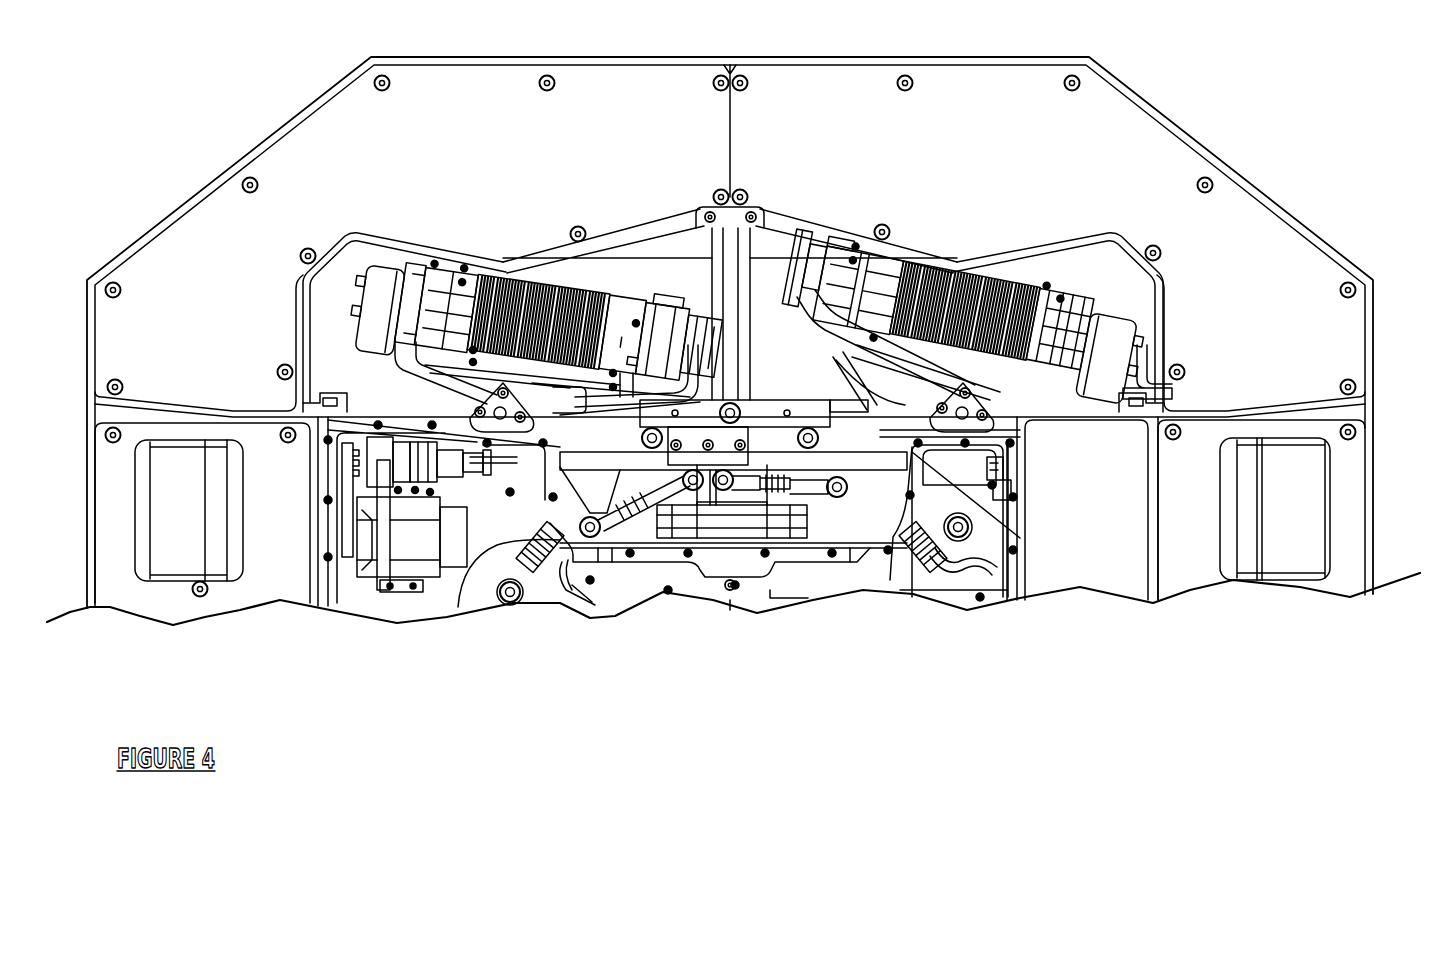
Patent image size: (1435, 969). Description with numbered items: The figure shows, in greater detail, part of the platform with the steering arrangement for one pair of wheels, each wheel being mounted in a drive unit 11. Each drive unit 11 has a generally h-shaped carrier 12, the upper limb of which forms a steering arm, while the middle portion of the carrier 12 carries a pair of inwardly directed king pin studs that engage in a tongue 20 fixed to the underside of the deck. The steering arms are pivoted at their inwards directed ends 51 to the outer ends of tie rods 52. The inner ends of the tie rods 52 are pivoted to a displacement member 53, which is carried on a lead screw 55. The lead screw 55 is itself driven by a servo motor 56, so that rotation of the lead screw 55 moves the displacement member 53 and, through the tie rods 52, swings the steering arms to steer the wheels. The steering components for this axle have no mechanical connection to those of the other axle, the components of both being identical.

The drive unit 11 is at (1077, 287).
The carrier 12 is at (868, 412).
The tongue 20 is at (995, 435).
The end 51 is at (565, 585).
The tie rod 52 is at (612, 548).
The displacement member 53 is at (710, 458).
The lead screw 55 is at (865, 458).
The servo motor 56 is at (415, 533).